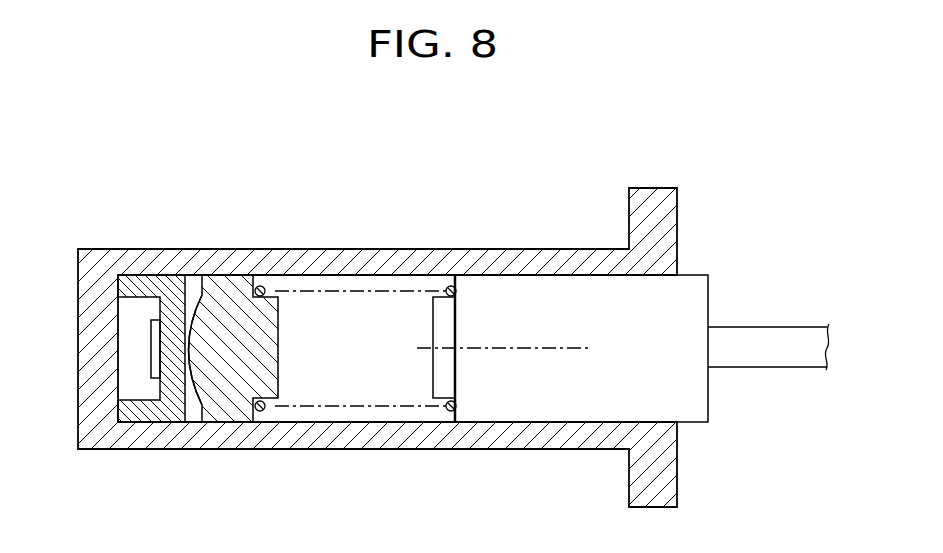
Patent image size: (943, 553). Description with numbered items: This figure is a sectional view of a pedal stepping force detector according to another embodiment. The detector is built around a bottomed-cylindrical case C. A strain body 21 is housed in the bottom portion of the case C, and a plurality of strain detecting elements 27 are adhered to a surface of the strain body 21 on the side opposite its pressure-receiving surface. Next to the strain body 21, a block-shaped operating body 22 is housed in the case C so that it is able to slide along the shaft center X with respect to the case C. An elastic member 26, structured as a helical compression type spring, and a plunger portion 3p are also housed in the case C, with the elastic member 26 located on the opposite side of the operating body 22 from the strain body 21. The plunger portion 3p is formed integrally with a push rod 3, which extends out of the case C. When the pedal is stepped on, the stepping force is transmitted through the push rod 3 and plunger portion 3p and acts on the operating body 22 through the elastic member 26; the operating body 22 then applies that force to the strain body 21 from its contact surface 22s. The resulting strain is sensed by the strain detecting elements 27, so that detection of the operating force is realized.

The case C is at (392, 249).
The strain body 21 is at (185, 400).
The strain detecting elements 27 is at (153, 333).
The operating body 22 is at (278, 322).
The contact surface 22s is at (186, 342).
The elastic member 26 is at (376, 404).
The plunger portion 3p is at (704, 396).
The push rod 3 is at (752, 330).
The shaft center X is at (514, 350).